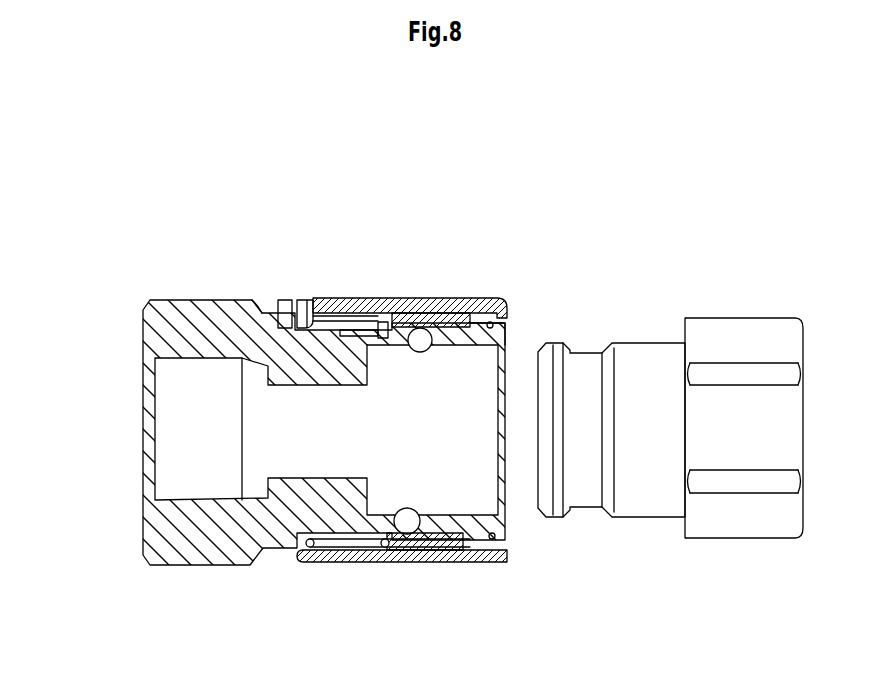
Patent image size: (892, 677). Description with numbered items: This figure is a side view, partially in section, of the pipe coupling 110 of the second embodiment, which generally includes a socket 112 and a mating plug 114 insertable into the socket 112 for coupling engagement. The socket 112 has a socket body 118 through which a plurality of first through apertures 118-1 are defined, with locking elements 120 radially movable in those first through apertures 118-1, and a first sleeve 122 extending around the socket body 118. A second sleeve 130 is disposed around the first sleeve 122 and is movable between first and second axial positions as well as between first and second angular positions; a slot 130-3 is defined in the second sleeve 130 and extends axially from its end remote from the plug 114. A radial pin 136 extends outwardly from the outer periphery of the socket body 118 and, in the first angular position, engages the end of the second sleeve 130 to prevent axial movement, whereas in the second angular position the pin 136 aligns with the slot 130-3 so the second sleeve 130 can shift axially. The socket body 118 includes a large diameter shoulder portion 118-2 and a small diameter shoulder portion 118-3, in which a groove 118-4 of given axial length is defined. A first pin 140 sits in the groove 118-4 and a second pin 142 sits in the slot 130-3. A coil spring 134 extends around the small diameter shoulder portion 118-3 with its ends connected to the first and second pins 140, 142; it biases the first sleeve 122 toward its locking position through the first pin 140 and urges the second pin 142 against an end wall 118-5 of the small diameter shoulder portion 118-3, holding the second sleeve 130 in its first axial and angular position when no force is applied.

The pipe coupling 110 is at (551, 285).
The socket 112 is at (346, 236).
The plug 114 is at (660, 318).
The socket body 118 is at (166, 299).
The first through apertures 118-1 is at (408, 540).
The large diameter shoulder portion 118-2 is at (280, 299).
The small diameter shoulder portion 118-3 is at (463, 298).
The groove 118-4 is at (365, 323).
The end wall 118-5 is at (266, 375).
The locking elements 120 is at (428, 552).
The first sleeve 122 is at (443, 560).
The second sleeve 130 is at (312, 565).
The slot 130-3 is at (342, 298).
The coil spring 134 is at (352, 549).
The radial pin 136 is at (238, 298).
The first pin 140 is at (388, 325).
The second pin 142 is at (305, 299).